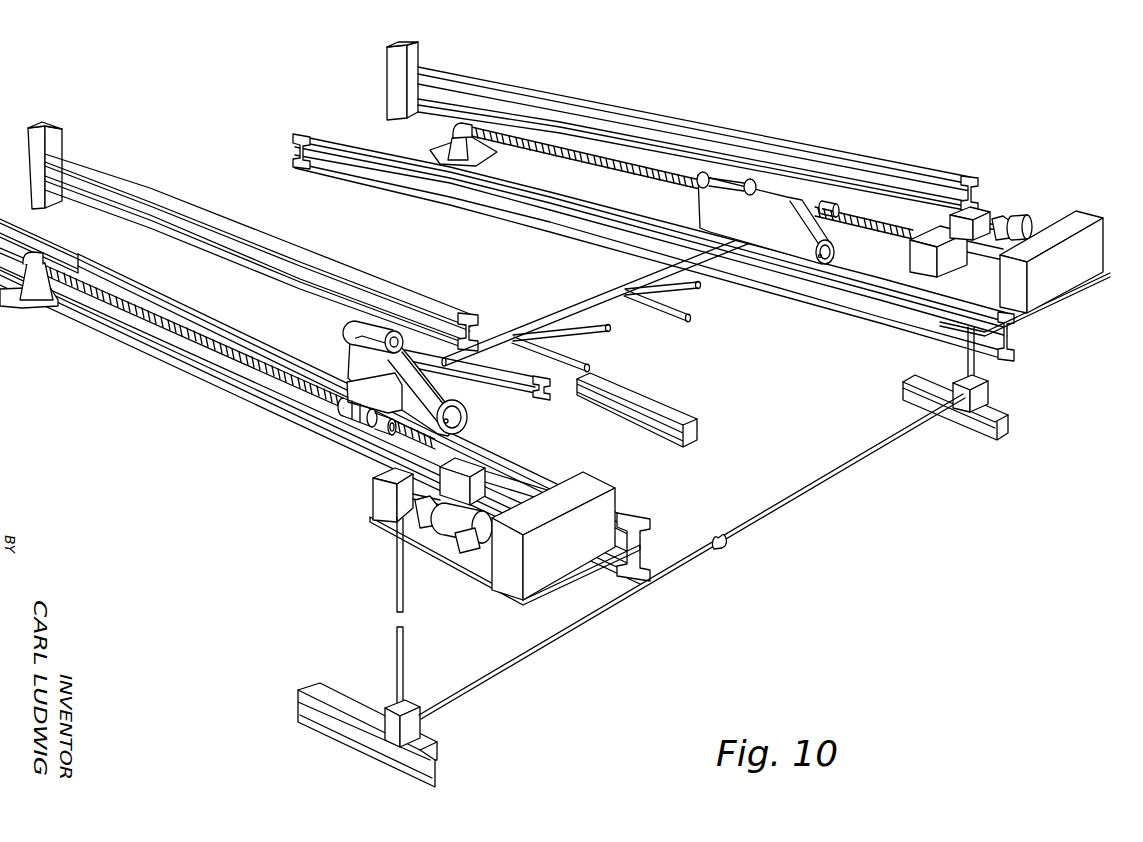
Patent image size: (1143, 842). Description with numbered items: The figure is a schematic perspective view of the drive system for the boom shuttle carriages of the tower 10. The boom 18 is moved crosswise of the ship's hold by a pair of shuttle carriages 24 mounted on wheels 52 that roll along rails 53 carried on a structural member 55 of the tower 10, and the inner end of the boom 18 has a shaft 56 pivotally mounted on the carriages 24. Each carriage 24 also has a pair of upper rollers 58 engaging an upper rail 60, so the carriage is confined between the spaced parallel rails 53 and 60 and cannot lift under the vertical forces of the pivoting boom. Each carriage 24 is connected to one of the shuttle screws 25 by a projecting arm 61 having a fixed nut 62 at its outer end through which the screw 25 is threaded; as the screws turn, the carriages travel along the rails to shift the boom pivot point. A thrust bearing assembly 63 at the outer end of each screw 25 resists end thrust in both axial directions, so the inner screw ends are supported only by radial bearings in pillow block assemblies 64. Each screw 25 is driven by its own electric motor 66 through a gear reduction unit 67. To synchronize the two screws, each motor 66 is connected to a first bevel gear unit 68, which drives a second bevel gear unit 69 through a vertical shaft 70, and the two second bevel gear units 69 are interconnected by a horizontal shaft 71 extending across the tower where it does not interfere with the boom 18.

The tower 10 is at (380, 60).
The boom 18 is at (582, 362).
The shuttle carriage 24 is at (449, 386).
The shuttle screw 25 is at (187, 338).
The wheel 52 is at (469, 418).
The rail 53 is at (144, 294).
The structural member 55 is at (243, 385).
The shaft 56 is at (590, 300).
The upper roller 58 is at (352, 326).
The upper rail 60 is at (254, 272).
The projecting arm 61 is at (378, 428).
The fixed nut 62 is at (336, 413).
The thrust bearing assembly 63 is at (492, 466).
The pillow block assembly 64 is at (38, 255).
The electric motor 66 is at (462, 532).
The gear reduction unit 67 is at (563, 574).
The first bevel gear unit 68 is at (372, 488).
The second bevel gear unit 69 is at (425, 723).
The vertical shaft 70 is at (395, 633).
The horizontal shaft 71 is at (690, 568).